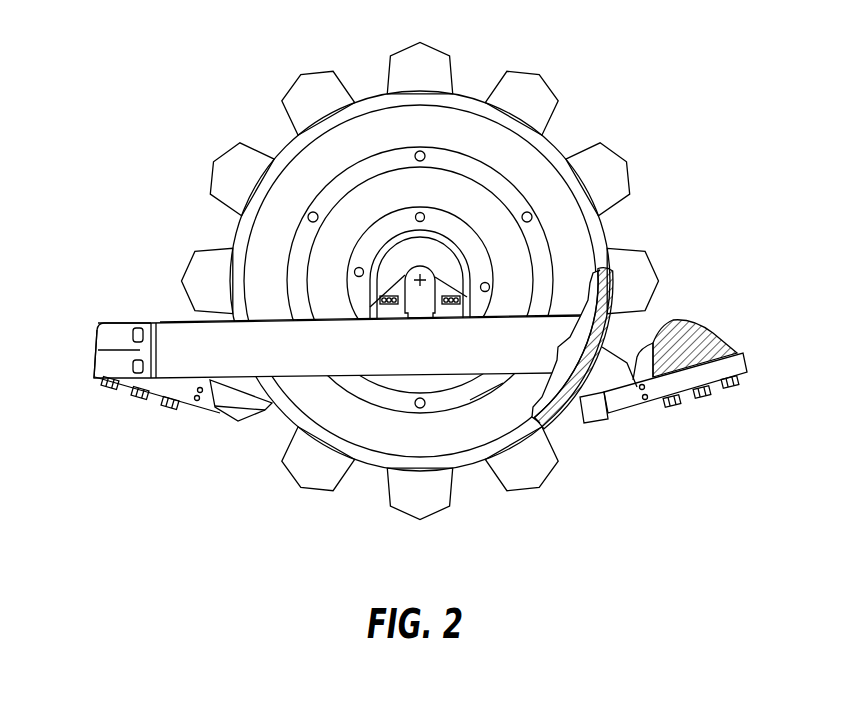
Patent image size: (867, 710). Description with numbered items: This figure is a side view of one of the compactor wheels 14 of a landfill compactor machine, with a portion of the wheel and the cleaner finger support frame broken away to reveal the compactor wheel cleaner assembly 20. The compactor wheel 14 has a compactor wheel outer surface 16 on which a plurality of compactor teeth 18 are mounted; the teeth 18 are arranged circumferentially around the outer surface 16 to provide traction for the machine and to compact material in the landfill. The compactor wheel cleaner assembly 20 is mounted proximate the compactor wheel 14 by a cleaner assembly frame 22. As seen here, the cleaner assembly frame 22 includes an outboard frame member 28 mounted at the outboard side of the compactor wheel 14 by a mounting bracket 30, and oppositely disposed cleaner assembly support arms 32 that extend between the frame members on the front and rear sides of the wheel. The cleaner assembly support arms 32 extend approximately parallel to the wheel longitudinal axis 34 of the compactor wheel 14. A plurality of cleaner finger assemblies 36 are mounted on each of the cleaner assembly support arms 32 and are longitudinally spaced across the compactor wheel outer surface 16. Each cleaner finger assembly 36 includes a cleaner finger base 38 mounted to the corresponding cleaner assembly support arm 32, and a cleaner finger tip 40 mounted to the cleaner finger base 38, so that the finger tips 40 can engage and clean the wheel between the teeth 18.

The compactor wheel 14 is at (381, 260).
The compactor wheel outer surface 16 is at (373, 93).
The compactor teeth 18 is at (498, 86).
The compactor wheel cleaner assembly 20 is at (399, 347).
The cleaner assembly frame 22 is at (200, 320).
The outboard frame member 28 is at (432, 357).
The mounting bracket 30 is at (437, 287).
The cleaner assembly support arm 32 is at (105, 330).
The wheel longitudinal axis 34 is at (428, 272).
The cleaner finger assembly 36 is at (152, 416).
The cleaner finger base 38 is at (122, 390).
The cleaner finger tip 40 is at (207, 405).